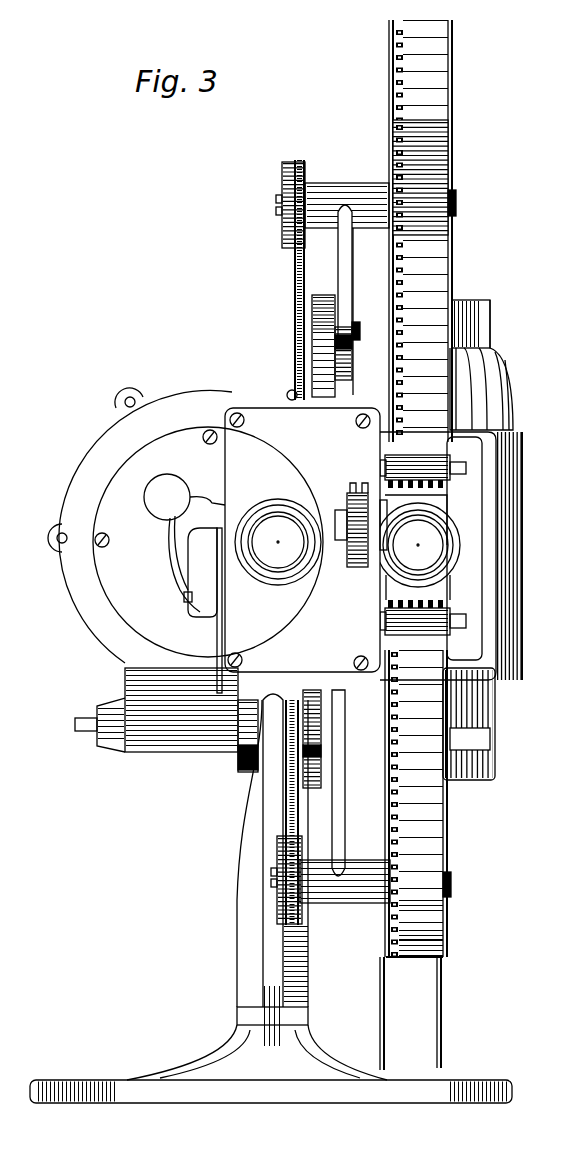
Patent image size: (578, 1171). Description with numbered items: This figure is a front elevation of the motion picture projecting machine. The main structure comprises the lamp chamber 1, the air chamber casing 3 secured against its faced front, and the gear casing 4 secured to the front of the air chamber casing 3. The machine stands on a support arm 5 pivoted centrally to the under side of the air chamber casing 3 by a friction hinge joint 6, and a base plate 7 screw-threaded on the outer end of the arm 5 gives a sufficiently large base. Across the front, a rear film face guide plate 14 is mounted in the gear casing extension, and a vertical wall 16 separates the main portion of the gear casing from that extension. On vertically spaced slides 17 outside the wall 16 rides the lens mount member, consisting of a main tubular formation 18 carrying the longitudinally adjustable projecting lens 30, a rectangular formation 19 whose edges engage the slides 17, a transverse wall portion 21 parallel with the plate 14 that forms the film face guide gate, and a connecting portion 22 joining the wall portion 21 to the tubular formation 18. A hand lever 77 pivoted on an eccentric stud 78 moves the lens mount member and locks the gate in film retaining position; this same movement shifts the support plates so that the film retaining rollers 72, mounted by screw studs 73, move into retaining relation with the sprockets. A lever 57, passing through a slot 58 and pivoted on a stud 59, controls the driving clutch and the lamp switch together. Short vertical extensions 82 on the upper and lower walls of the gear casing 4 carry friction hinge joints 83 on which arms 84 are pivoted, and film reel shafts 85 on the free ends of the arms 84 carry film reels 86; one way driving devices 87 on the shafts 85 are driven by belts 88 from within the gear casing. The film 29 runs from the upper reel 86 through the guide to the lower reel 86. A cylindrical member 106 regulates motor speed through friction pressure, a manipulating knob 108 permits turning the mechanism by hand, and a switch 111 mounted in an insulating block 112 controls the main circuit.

The lamp chamber 1 is at (508, 386).
The air chamber casing 3 is at (115, 432).
The gear casing 4 is at (148, 467).
The support arm 5 is at (247, 980).
The friction hinge joint 6 is at (235, 757).
The base plate 7 is at (130, 1084).
The rear film face guide plate 14 is at (472, 454).
The wall 16 is at (352, 448).
The slides 17 is at (372, 500).
The main tubular formation 18 is at (458, 528).
The rectangular formation 19 is at (378, 575).
The transverse wall portion 21 is at (447, 503).
The connecting portion 22 is at (462, 570).
The film 29 is at (437, 407).
The projecting lens 30 is at (452, 547).
The lever 57 is at (127, 684).
The slot 58 is at (200, 600).
The stud 59 is at (185, 592).
The film retaining rollers 72 is at (452, 484).
The screw studs 73 is at (460, 468).
The hand lever 77 is at (353, 661).
The eccentric stud 78 is at (347, 520).
The vertical extensions 82 is at (323, 368).
The friction hinge joints 83 is at (322, 332).
The arms 84 is at (340, 282).
The film reel shafts 85 is at (456, 204).
The film reels 86 is at (452, 168).
The one way driving devices 87 is at (276, 208).
The driving belts 88 is at (295, 262).
The cylindrical member 106 is at (155, 495).
The manipulating knob 108 is at (280, 595).
The switch 111 is at (490, 740).
The block 112 is at (452, 793).